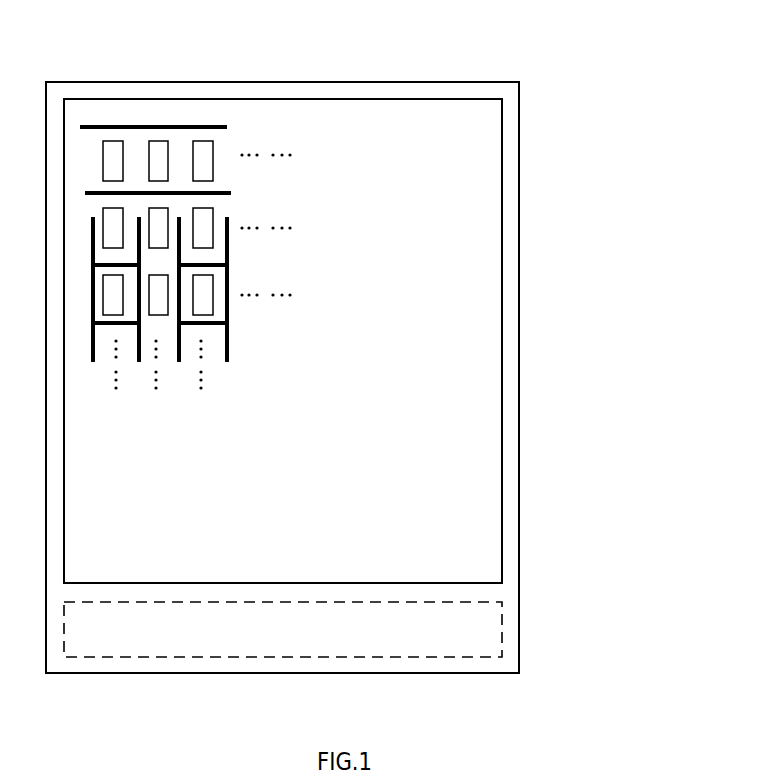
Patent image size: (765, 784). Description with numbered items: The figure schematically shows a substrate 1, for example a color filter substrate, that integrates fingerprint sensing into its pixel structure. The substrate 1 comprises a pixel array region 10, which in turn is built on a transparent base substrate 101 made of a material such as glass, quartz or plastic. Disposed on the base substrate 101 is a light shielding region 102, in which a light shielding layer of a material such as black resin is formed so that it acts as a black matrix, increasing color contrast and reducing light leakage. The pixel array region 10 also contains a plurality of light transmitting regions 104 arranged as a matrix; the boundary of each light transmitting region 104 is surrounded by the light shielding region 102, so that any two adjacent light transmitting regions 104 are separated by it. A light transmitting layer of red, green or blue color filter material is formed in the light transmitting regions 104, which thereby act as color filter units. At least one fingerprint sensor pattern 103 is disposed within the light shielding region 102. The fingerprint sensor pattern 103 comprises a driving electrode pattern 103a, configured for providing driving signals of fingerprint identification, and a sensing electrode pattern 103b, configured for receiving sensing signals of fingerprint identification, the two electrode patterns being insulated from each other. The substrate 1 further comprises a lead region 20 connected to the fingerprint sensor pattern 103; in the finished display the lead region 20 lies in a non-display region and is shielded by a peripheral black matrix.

The substrate 1 is at (588, 35).
The pixel array region 10 is at (502, 545).
The base substrate 101 is at (519, 432).
The light shielding region 102 is at (138, 172).
The fingerprint sensor pattern 103 is at (288, 254).
The driving electrode pattern 103a is at (229, 290).
The sensing electrode pattern 103b is at (232, 190).
The light transmitting regions 104 is at (203, 157).
The lead region 20 is at (475, 658).